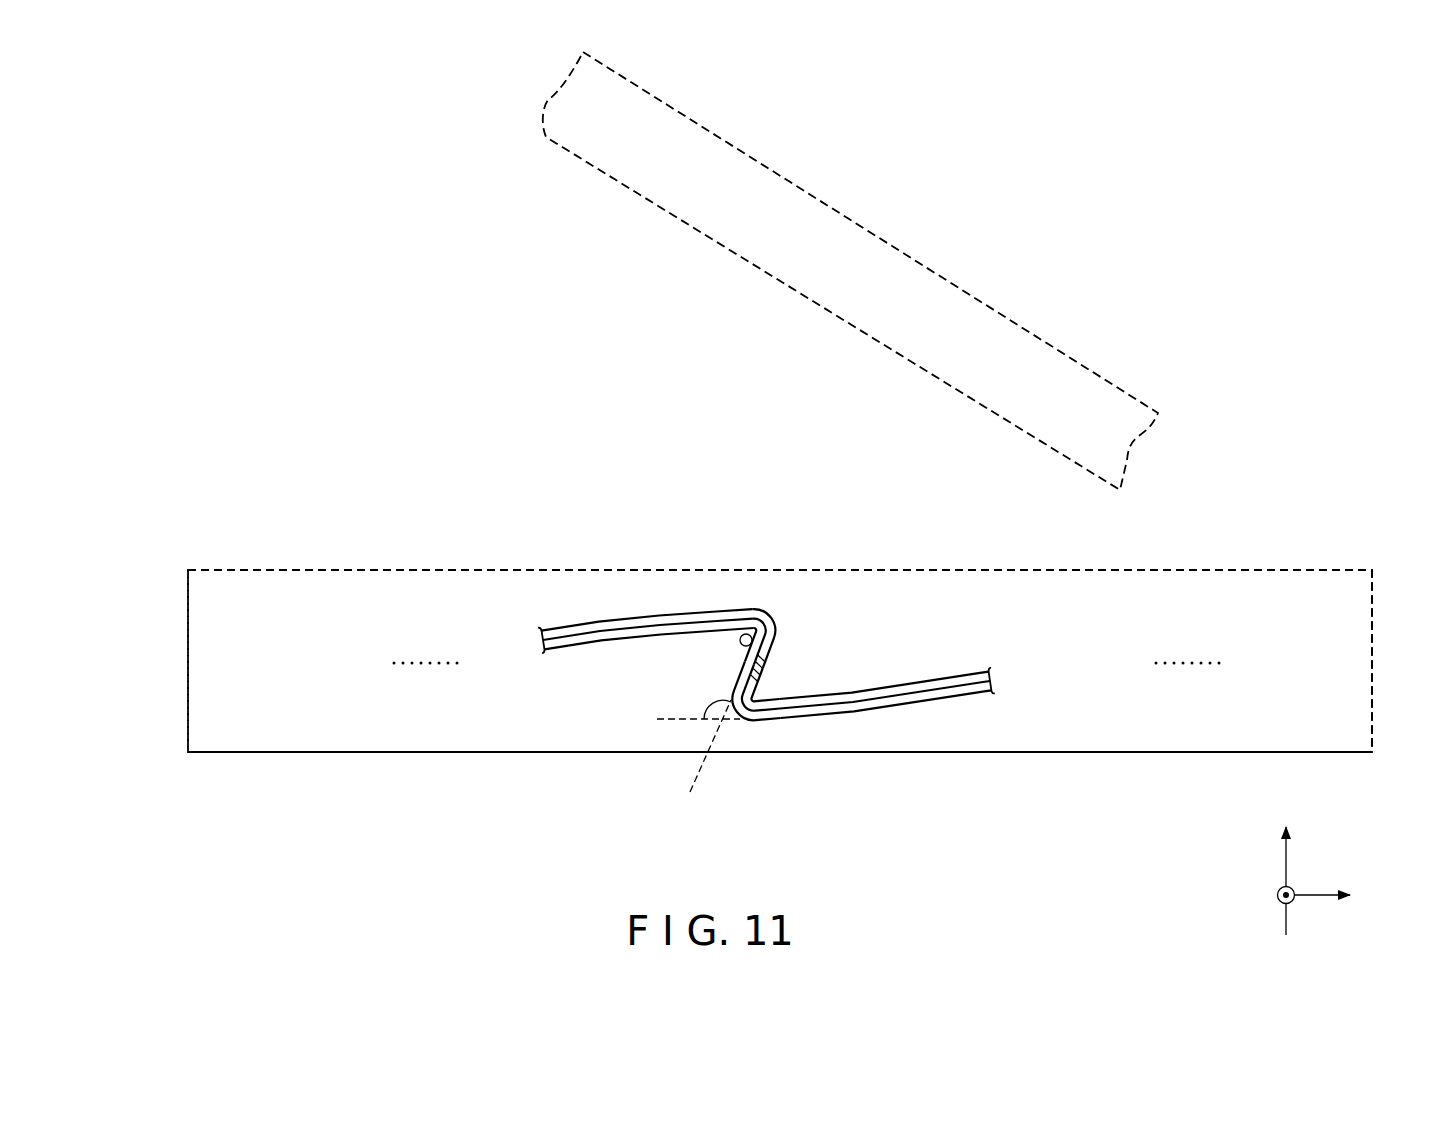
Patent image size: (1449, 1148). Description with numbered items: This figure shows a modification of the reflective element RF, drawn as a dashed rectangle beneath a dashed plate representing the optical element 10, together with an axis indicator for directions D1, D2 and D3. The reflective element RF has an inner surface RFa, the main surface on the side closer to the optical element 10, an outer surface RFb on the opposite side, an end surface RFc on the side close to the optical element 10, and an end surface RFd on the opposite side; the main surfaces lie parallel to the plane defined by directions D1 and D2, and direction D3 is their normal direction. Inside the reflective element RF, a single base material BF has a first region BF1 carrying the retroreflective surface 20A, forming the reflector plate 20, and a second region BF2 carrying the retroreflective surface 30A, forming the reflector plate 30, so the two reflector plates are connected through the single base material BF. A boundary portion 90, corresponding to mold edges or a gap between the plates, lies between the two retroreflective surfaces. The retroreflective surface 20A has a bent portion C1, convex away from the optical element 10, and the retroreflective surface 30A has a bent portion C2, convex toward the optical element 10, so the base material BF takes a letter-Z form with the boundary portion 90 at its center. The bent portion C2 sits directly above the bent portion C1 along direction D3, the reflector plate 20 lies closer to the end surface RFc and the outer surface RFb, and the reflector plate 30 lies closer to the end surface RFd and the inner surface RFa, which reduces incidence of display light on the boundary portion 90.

The optical element 10 is at (1042, 338).
The reflector plate 20 is at (910, 699).
The retroreflective surface 20A is at (956, 678).
The reflector plate 30 is at (696, 605).
The retroreflective surface 30A is at (599, 626).
The boundary portion 90 is at (770, 680).
The bent portion C1 is at (764, 697).
The bent portion C2 is at (784, 625).
The base material BF is at (1008, 684).
The first region BF1 is at (912, 707).
The second region BF2 is at (634, 646).
The reflective element RF is at (1359, 533).
The inner surface RFa is at (263, 566).
The outer surface RFb is at (270, 755).
The end surface RFc is at (1376, 637).
The end surface RFd is at (185, 642).
The direction D1 is at (1245, 895).
The direction D2 is at (1340, 895).
The direction D3 is at (1287, 867).